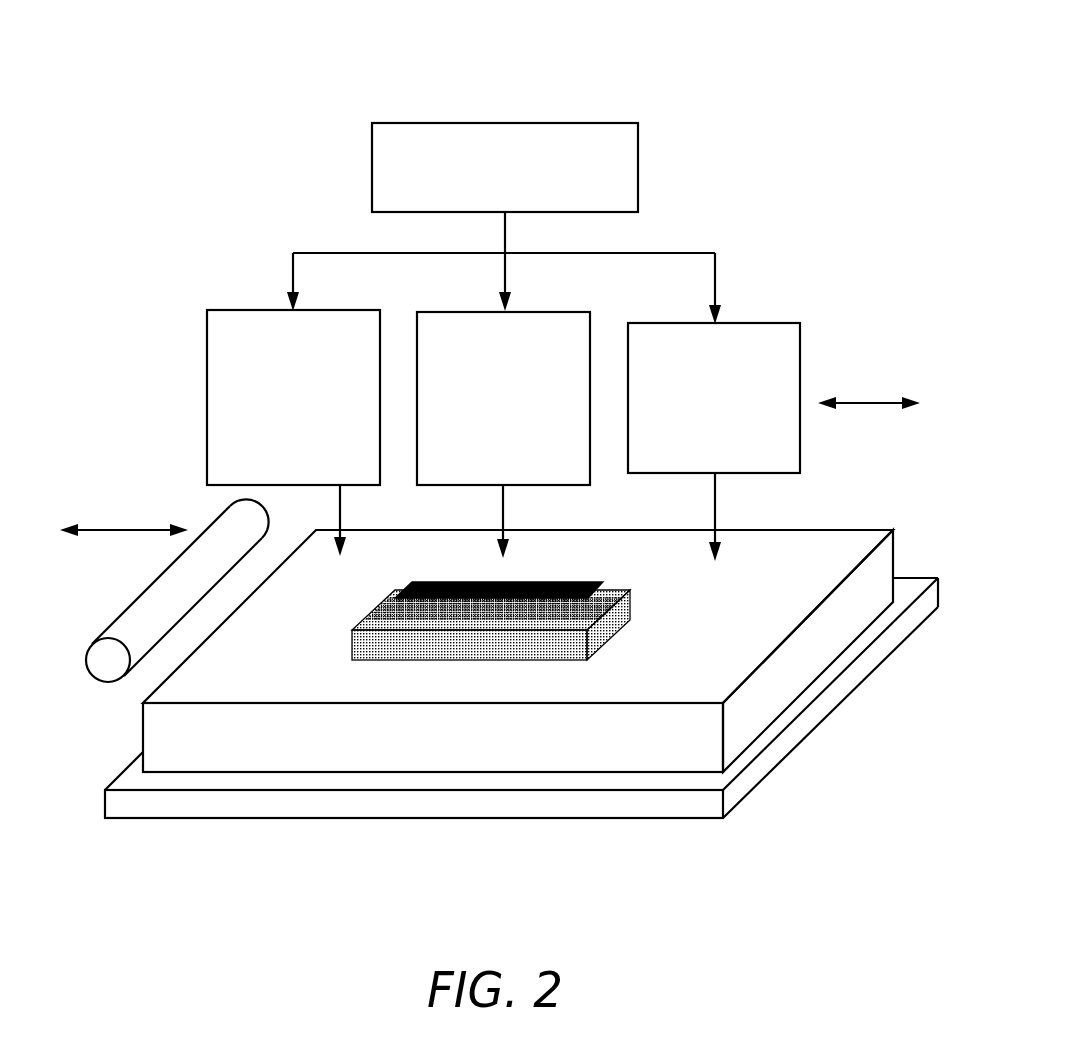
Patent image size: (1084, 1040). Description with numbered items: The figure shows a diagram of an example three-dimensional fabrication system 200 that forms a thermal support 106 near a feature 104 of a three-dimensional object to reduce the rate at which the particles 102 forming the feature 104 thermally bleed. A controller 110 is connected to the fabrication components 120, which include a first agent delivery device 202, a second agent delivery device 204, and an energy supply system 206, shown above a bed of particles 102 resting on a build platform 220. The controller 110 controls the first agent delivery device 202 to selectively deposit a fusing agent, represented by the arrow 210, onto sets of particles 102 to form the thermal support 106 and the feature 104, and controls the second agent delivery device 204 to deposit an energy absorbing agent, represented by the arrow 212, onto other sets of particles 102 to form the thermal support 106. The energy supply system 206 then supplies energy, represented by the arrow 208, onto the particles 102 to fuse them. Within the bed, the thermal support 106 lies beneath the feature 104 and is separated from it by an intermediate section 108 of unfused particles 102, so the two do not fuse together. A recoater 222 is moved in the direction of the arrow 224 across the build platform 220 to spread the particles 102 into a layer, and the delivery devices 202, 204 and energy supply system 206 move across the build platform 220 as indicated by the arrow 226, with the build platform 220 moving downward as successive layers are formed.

The 3D fabrication system 200 is at (483, 67).
The controller 110 is at (483, 195).
The fabrication components 120 is at (211, 272).
The first agent delivery device 202 is at (272, 468).
The second agent delivery device 204 is at (482, 468).
The energy supply system 206 is at (693, 455).
The energy 208 is at (715, 508).
The fusing agent 210 is at (340, 497).
The energy absorbing agent 212 is at (503, 502).
The build platform 220 is at (690, 818).
The recoater 222 is at (110, 681).
The recoater movement direction 224 is at (103, 529).
The carriage movement directions 226 is at (873, 402).
The particles 102 is at (577, 773).
The feature 104 is at (425, 605).
The thermal support 106 is at (460, 659).
The intermediate section 108 is at (540, 617).